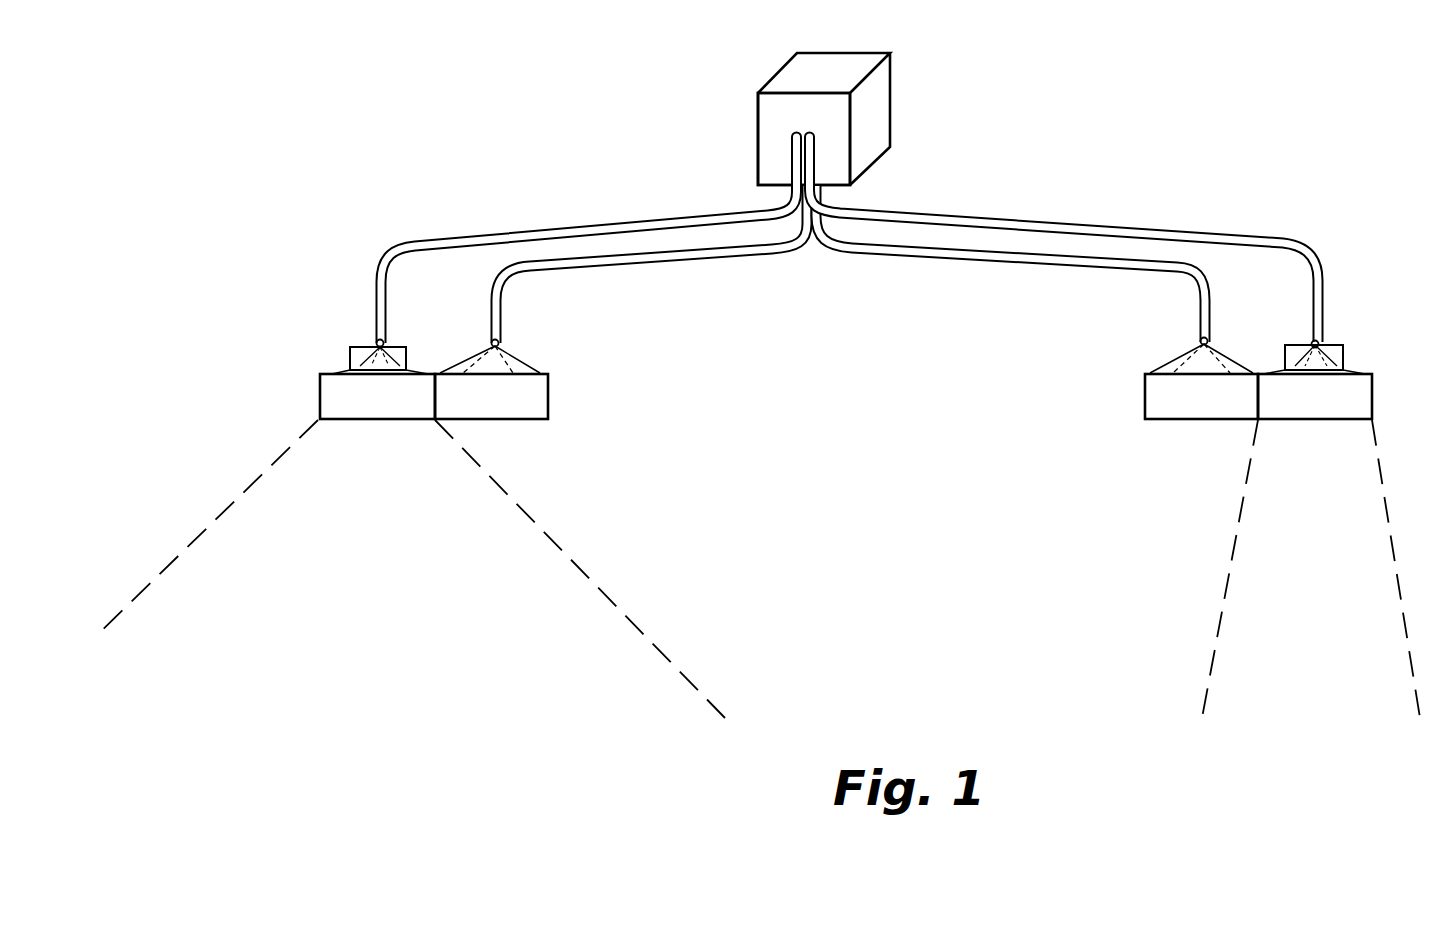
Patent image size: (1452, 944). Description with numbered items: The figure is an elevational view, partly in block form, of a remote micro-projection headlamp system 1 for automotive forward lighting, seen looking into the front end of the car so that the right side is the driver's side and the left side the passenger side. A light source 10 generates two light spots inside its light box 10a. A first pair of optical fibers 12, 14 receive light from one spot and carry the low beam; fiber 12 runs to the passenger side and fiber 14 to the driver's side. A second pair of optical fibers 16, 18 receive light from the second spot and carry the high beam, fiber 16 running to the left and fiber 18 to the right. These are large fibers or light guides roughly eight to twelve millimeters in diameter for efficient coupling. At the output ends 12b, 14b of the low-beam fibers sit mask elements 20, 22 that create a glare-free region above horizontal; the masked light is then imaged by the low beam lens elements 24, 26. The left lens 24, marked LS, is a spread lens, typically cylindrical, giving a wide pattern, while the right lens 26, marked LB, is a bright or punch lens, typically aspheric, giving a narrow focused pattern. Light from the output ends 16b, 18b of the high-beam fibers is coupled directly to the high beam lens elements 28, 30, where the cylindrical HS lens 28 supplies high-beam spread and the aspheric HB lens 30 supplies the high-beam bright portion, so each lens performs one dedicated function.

The remote micro-projection headlamp system 1 is at (987, 41).
The light source 10 is at (817, 119).
The light box 10a is at (766, 93).
The first optical fiber of the first pair 12 is at (490, 235).
The output end of optical fiber 12 12b is at (385, 341).
The second optical fiber of the first pair 14 is at (1080, 223).
The output end of optical fiber 14 14b is at (1309, 343).
The first optical fiber of the second pair 16 is at (640, 265).
The output end of optical fiber 16 16b is at (502, 343).
The second optical fiber of the second pair 18 is at (955, 260).
The output end of optical fiber 18 18b is at (1199, 341).
The mask element 20 is at (350, 352).
The mask element 22 is at (1340, 349).
The first low beam lens element (LS) 24 is at (320, 380).
The second low beam lens element (LB) 26 is at (1372, 374).
The first high beam lens element (HS) 28 is at (548, 399).
The second high beam lens element (HB) 30 is at (1145, 419).